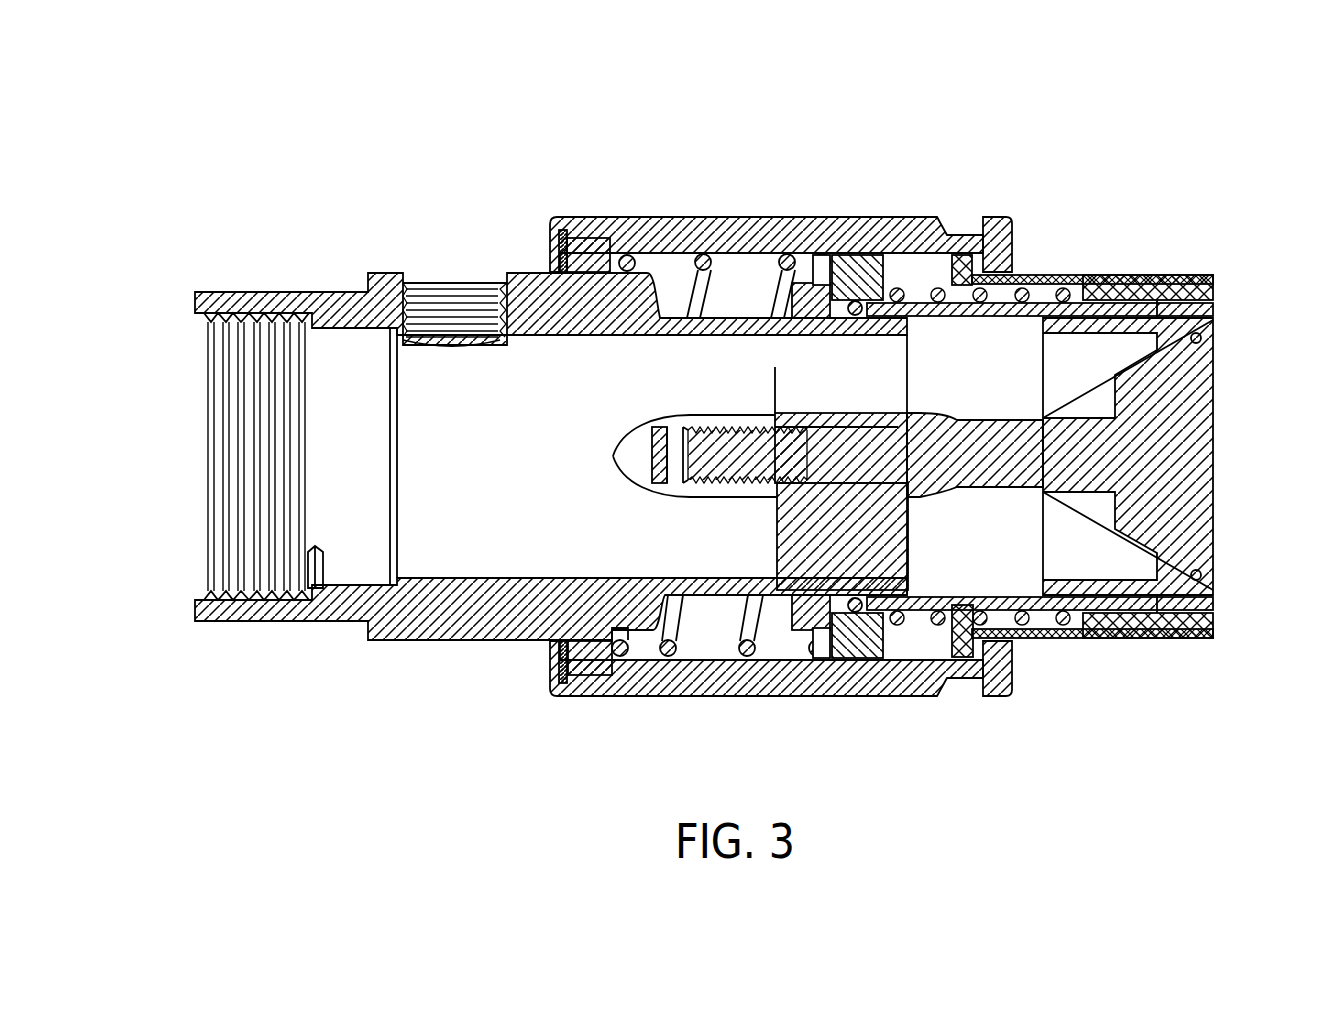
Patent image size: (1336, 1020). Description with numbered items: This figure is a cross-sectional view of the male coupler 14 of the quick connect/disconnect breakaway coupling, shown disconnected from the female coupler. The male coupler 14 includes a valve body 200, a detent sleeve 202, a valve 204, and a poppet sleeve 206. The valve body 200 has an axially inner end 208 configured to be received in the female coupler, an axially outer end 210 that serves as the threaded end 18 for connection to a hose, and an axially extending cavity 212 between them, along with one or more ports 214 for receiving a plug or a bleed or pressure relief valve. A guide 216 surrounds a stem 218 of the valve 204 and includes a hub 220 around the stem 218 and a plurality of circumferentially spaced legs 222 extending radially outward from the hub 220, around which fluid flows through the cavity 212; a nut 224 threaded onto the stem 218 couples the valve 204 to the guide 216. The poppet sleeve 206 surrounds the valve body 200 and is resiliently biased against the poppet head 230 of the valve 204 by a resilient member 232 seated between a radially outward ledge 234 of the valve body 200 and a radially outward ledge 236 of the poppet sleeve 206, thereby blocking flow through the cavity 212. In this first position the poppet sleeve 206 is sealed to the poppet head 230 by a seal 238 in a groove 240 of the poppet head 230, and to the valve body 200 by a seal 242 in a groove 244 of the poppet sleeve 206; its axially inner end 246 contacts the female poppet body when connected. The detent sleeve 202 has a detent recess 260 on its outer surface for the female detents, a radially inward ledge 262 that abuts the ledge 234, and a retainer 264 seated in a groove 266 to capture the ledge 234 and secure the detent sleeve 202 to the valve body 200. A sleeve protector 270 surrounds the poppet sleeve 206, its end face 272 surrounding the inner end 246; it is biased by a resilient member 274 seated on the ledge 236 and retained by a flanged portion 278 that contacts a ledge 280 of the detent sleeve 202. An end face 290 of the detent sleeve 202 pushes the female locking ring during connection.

The male coupler 14 is at (1160, 143).
The threaded end 18 is at (195, 465).
The valve body 200 is at (325, 292).
The detent sleeve 202 is at (600, 236).
The valve 204 is at (1100, 525).
The poppet sleeve 206 is at (850, 242).
The axially inner end 208 is at (908, 348).
The axially outer end 210 is at (195, 300).
The axially extending cavity 212 is at (524, 466).
The port 214 is at (455, 283).
The guide 216 is at (790, 415).
The stem 218 is at (912, 455).
The hub 220 is at (834, 420).
The legs 222 is at (790, 528).
The nut 224 is at (625, 478).
The poppet head 230 is at (1214, 362).
The resilient member 232 is at (750, 650).
The ledge 234 is at (634, 255).
The ledge 236 is at (812, 258).
The seal 238 is at (1200, 593).
The groove 240 is at (1214, 302).
The seal 242 is at (858, 612).
The groove 244 is at (857, 650).
The axially inner end 246 is at (1216, 594).
The detent recess 260 is at (1000, 695).
The ledge 262 is at (575, 236).
The retainer 264 is at (560, 246).
The groove 266 is at (557, 676).
The sleeve protector 270 is at (1040, 275).
The end face 272 is at (1213, 278).
The resilient member 274 is at (962, 660).
The flanged portion 278 is at (962, 258).
The ledge 280 is at (987, 665).
The end face 290 is at (1014, 650).